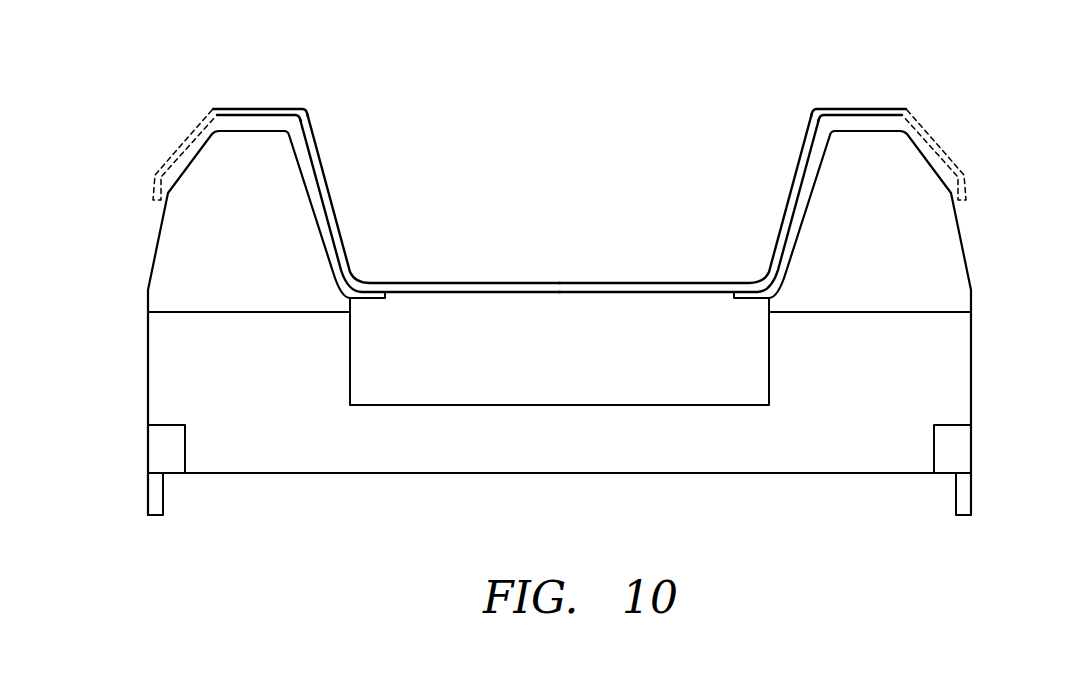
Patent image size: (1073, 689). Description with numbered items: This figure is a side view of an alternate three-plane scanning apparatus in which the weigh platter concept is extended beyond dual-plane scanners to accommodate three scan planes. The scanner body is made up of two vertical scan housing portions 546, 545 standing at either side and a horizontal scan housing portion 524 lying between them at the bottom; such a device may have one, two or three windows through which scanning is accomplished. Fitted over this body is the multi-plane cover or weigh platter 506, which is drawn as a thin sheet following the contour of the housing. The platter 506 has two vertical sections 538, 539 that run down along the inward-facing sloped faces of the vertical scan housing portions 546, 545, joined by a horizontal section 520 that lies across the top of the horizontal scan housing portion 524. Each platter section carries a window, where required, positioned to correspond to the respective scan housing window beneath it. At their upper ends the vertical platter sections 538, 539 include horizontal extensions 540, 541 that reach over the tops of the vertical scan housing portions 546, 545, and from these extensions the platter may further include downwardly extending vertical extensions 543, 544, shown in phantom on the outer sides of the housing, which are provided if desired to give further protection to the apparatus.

The multi-plane cover or weigh platter 506 is at (442, 283).
The horizontal section 520 is at (603, 285).
The horizontal scan housing portion 524 is at (732, 355).
The vertical section 538 is at (332, 208).
The vertical section 539 is at (790, 183).
The horizontal extension 540 is at (233, 107).
The horizontal extension 541 is at (853, 107).
The vertical extension 543 is at (178, 147).
The vertical extension 544 is at (933, 143).
The vertical scan housing portion 545 is at (927, 240).
The vertical scan housing portion 546 is at (202, 240).